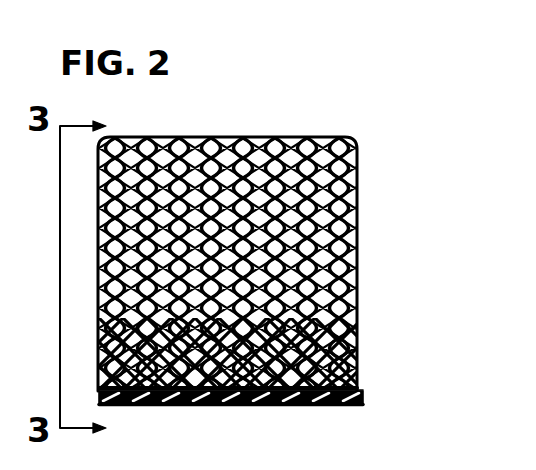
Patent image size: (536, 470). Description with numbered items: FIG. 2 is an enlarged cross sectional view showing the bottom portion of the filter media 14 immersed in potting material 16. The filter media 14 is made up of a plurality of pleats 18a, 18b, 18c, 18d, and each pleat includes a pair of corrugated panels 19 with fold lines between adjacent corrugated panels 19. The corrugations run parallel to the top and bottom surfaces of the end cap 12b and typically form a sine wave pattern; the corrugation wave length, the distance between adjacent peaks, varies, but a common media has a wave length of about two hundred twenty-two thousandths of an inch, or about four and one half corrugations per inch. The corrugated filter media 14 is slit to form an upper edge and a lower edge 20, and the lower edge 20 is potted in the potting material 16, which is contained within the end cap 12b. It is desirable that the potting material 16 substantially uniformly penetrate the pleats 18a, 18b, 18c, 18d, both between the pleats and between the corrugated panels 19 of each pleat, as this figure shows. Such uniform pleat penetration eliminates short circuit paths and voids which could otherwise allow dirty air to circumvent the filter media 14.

The filter media 14 is at (95, 283).
The pleat 18a is at (170, 122).
The pleat 18b is at (218, 122).
The pleat 18c is at (270, 122).
The pleat 18d is at (322, 122).
The corrugated panel 19 is at (101, 334).
The lower edge 20 is at (187, 405).
The end cap 12b is at (268, 405).
The potting material 16 is at (313, 405).